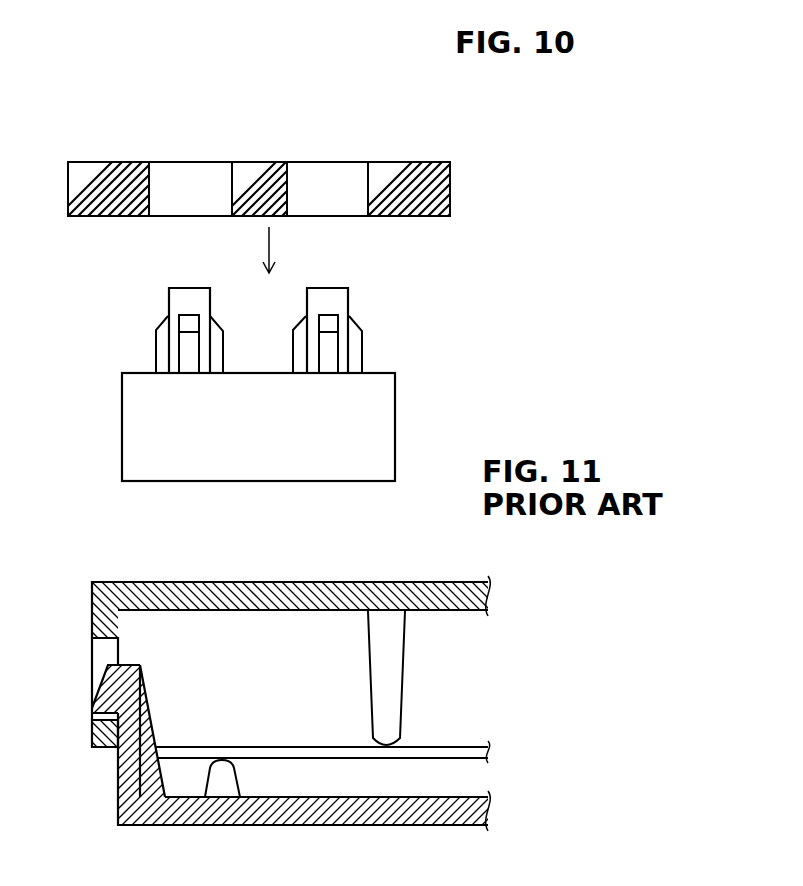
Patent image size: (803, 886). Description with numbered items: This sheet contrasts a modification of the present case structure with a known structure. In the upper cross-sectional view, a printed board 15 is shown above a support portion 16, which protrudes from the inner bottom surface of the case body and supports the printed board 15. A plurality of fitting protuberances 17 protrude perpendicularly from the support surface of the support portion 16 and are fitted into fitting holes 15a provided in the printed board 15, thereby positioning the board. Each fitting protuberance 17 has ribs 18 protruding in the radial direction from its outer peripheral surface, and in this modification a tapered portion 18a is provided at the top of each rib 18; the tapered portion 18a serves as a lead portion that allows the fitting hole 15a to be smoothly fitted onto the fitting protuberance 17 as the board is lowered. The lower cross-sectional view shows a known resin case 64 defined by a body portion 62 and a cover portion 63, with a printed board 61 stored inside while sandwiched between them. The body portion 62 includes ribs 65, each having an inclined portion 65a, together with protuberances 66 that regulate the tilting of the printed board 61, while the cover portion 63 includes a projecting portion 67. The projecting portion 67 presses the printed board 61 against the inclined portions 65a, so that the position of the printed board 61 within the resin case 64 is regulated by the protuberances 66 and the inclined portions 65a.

In FIG. 10, the printed board 15 is at (388, 162).
In FIG. 10, the fitting hole 15a is at (180, 178).
In FIG. 10, the support portion 16 is at (397, 412).
In FIG. 10, the fitting protuberance 17 is at (187, 287).
In FIG. 10, the rib 18 is at (223, 345).
In FIG. 10, the tapered portion 18a is at (186, 323).
In FIG. 11, the printed board 61 is at (453, 746).
In FIG. 11, the body portion 62 is at (458, 826).
In FIG. 11, the cover portion 63 is at (425, 588).
In FIG. 11, the resin case 64 is at (98, 829).
In FIG. 11, the rib 65 is at (155, 784).
In FIG. 11, the inclined portion 65a is at (161, 719).
In FIG. 11, the protuberance 66 is at (228, 782).
In FIG. 11, the projecting portion 67 is at (388, 663).